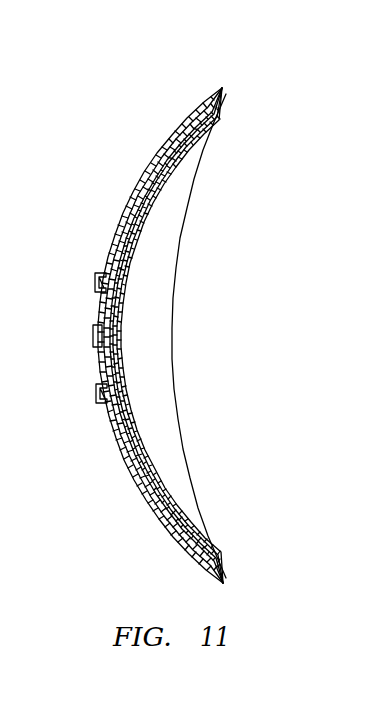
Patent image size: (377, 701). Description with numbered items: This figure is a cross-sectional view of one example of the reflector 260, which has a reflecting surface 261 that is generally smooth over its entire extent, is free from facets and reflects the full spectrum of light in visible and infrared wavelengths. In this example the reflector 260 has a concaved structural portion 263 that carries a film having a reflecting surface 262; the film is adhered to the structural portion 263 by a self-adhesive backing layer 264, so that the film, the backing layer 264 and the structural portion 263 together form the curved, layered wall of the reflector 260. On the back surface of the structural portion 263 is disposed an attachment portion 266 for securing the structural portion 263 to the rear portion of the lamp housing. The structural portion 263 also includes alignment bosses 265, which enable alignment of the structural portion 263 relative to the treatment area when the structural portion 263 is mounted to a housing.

The reflector 260 is at (155, 335).
The reflecting surface 261 is at (150, 378).
The reflecting surface of the film 262 is at (128, 250).
The structural portion 263 is at (157, 158).
The self-adhesive backing layer 264 is at (140, 205).
The alignment bosses 265 is at (95, 280).
The attachment portion 266 is at (93, 335).